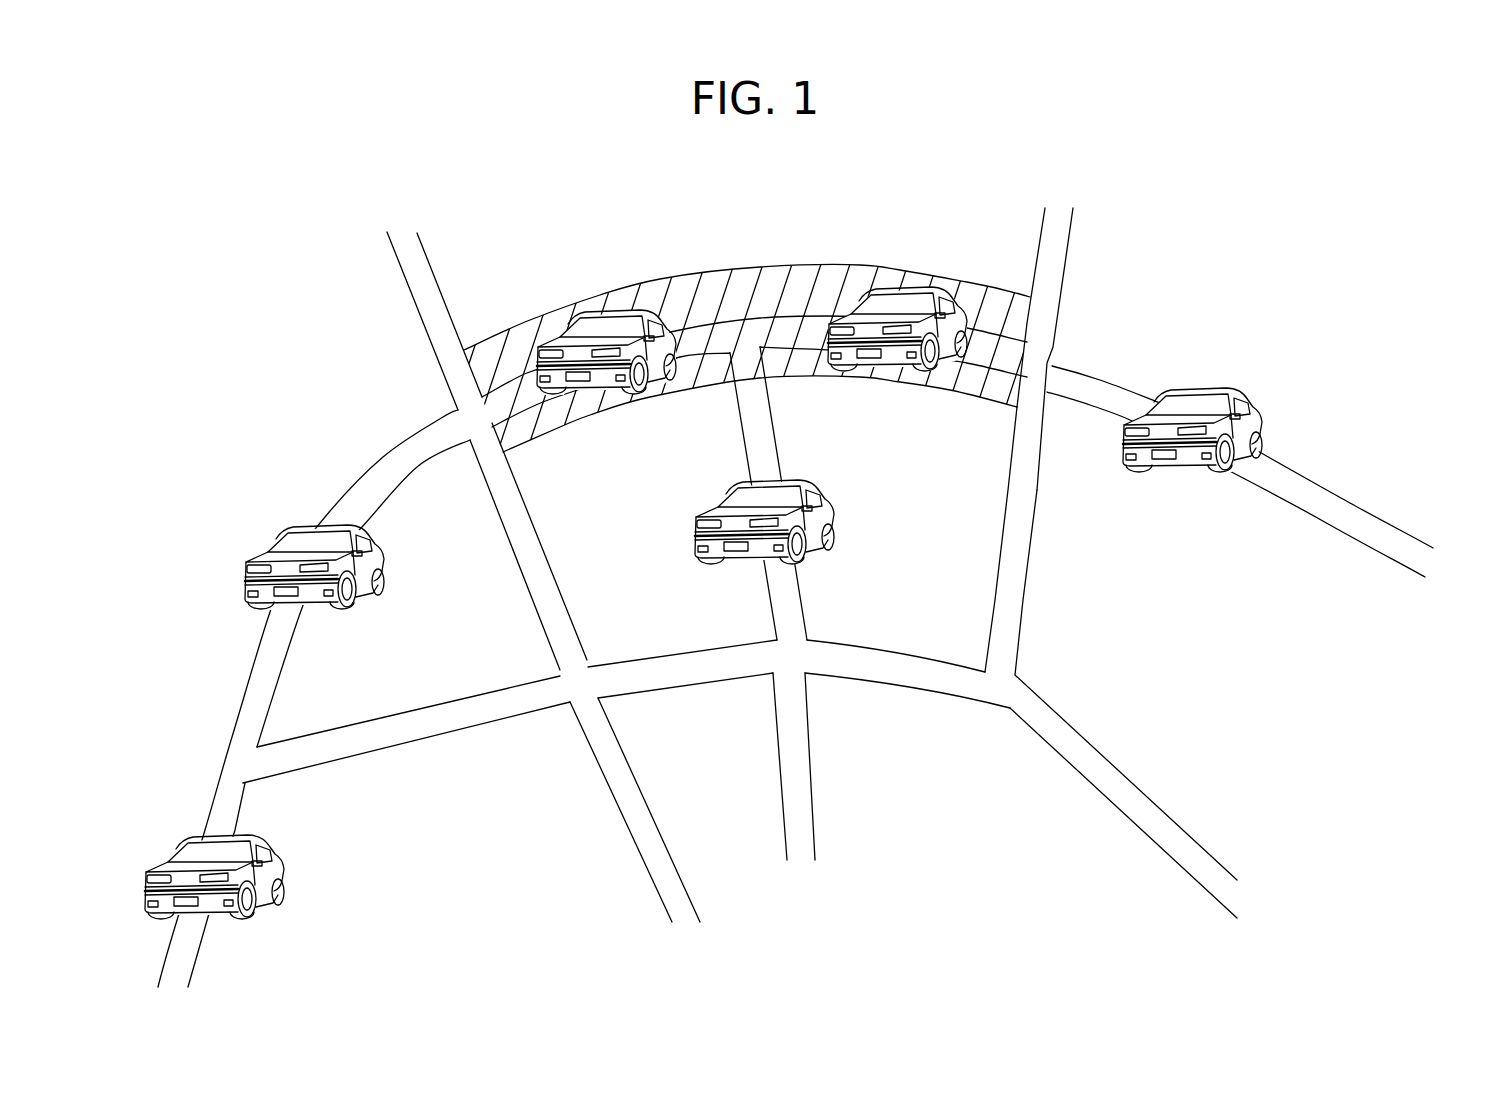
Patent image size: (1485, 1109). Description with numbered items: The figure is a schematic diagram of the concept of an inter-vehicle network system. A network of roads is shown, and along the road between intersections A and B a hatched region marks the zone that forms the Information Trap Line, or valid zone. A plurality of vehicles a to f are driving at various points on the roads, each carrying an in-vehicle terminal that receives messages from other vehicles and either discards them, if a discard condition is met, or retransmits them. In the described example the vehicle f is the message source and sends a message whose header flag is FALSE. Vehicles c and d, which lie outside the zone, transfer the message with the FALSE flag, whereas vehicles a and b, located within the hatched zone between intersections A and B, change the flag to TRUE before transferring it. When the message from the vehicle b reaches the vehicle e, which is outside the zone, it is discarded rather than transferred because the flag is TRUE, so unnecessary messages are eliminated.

The vehicle a is at (627, 316).
The vehicle b is at (913, 290).
The vehicle c is at (313, 525).
The vehicle d is at (786, 484).
The vehicle e is at (1212, 391).
The vehicle f is at (258, 852).
The intersection A is at (473, 423).
The intersection B is at (1040, 370).